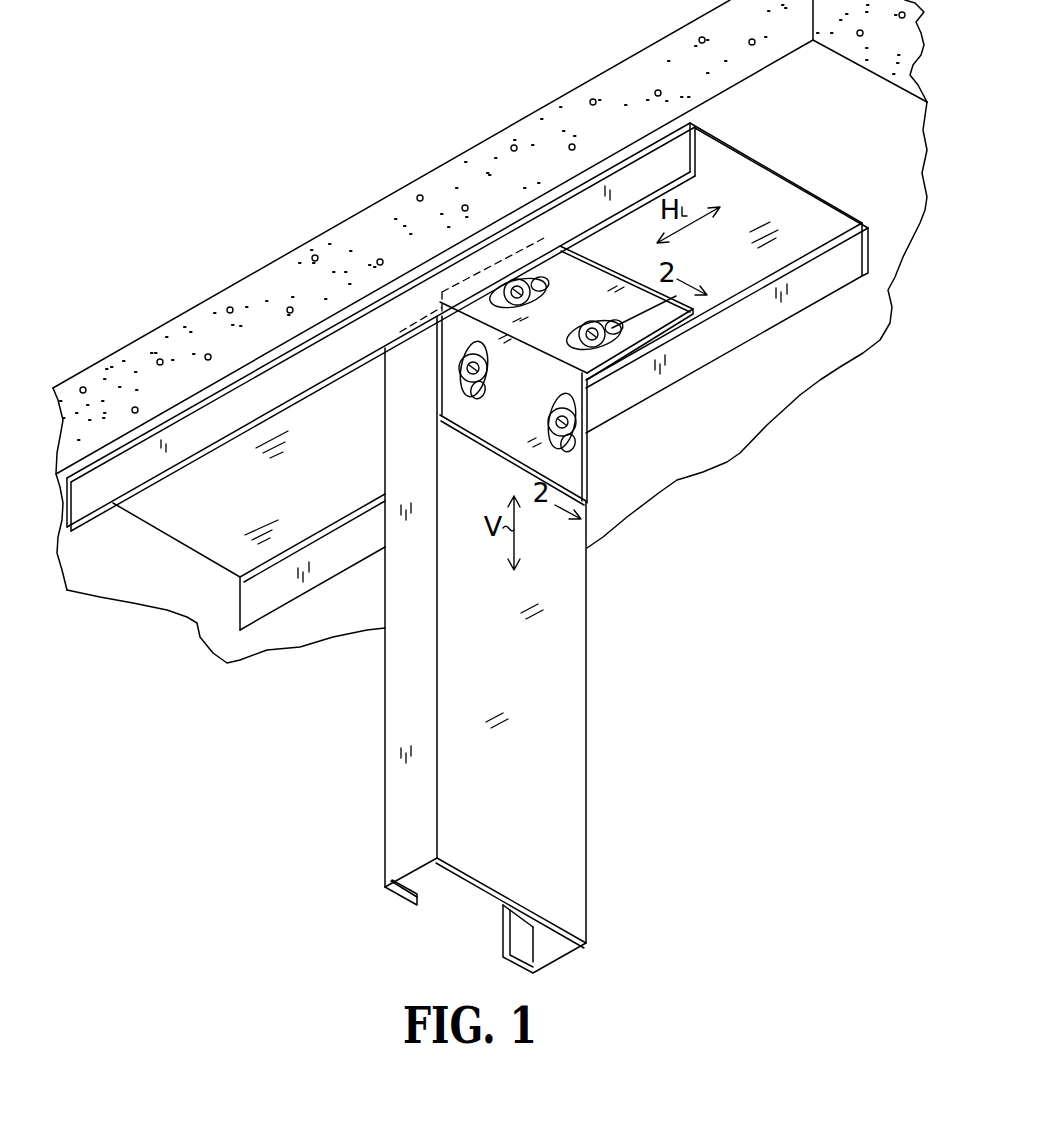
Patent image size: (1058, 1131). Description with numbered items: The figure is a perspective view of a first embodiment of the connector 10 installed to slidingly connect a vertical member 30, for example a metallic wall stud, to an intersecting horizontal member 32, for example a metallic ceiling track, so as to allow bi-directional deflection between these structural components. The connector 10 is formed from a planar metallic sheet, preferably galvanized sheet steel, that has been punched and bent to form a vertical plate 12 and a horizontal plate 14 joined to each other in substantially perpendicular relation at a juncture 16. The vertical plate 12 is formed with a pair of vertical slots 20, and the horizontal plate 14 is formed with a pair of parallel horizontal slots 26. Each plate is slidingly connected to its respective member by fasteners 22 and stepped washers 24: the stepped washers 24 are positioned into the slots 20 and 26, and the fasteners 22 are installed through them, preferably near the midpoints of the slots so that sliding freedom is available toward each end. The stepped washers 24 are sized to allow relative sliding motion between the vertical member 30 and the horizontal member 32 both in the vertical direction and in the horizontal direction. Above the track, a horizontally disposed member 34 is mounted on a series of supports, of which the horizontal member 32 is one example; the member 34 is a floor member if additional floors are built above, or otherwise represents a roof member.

The connector 10 is at (546, 371).
The vertical plate 12 is at (513, 411).
The horizontal plate 14 is at (577, 319).
The juncture 16 is at (536, 347).
The vertical slots 20 is at (473, 395).
The fasteners 22 is at (462, 361).
The stepped washers 24 is at (466, 388).
The horizontal slots 26 is at (550, 284).
The vertical member 30 is at (587, 683).
The horizontal member 32 is at (809, 291).
The horizontally disposed member 34 is at (843, 128).